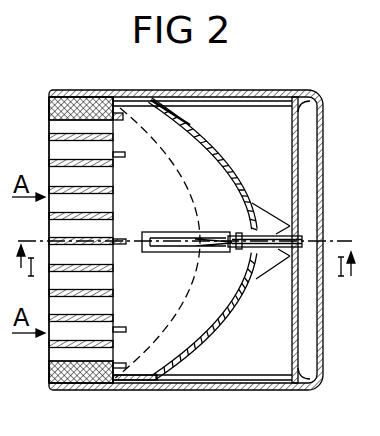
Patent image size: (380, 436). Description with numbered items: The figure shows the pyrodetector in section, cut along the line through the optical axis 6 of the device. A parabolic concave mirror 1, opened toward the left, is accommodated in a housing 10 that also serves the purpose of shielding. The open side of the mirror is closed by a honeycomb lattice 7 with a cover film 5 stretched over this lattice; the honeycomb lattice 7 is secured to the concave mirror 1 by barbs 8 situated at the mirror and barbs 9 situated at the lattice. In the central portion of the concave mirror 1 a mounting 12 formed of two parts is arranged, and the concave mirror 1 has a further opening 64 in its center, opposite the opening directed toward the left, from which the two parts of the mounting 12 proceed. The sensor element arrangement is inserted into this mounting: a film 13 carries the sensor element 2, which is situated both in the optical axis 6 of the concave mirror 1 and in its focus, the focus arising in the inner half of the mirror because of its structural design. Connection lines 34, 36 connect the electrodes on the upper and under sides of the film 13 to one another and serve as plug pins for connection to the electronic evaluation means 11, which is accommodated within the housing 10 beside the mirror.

The parabolic concave mirror 1 is at (187, 123).
The sensor element 2 is at (213, 253).
The cover film 5 is at (115, 183).
The optical axis 6 is at (36, 241).
The honeycomb lattice 7 is at (62, 186).
The barbs 8 is at (73, 94).
The barbs 9 is at (78, 94).
The housing 10 is at (287, 90).
The electronic evaluation means 11 is at (296, 162).
The mounting 12 is at (170, 253).
The film 13 is at (158, 232).
The connection line 34 is at (290, 256).
The connection line 36 is at (290, 226).
The further opening 64 is at (249, 270).